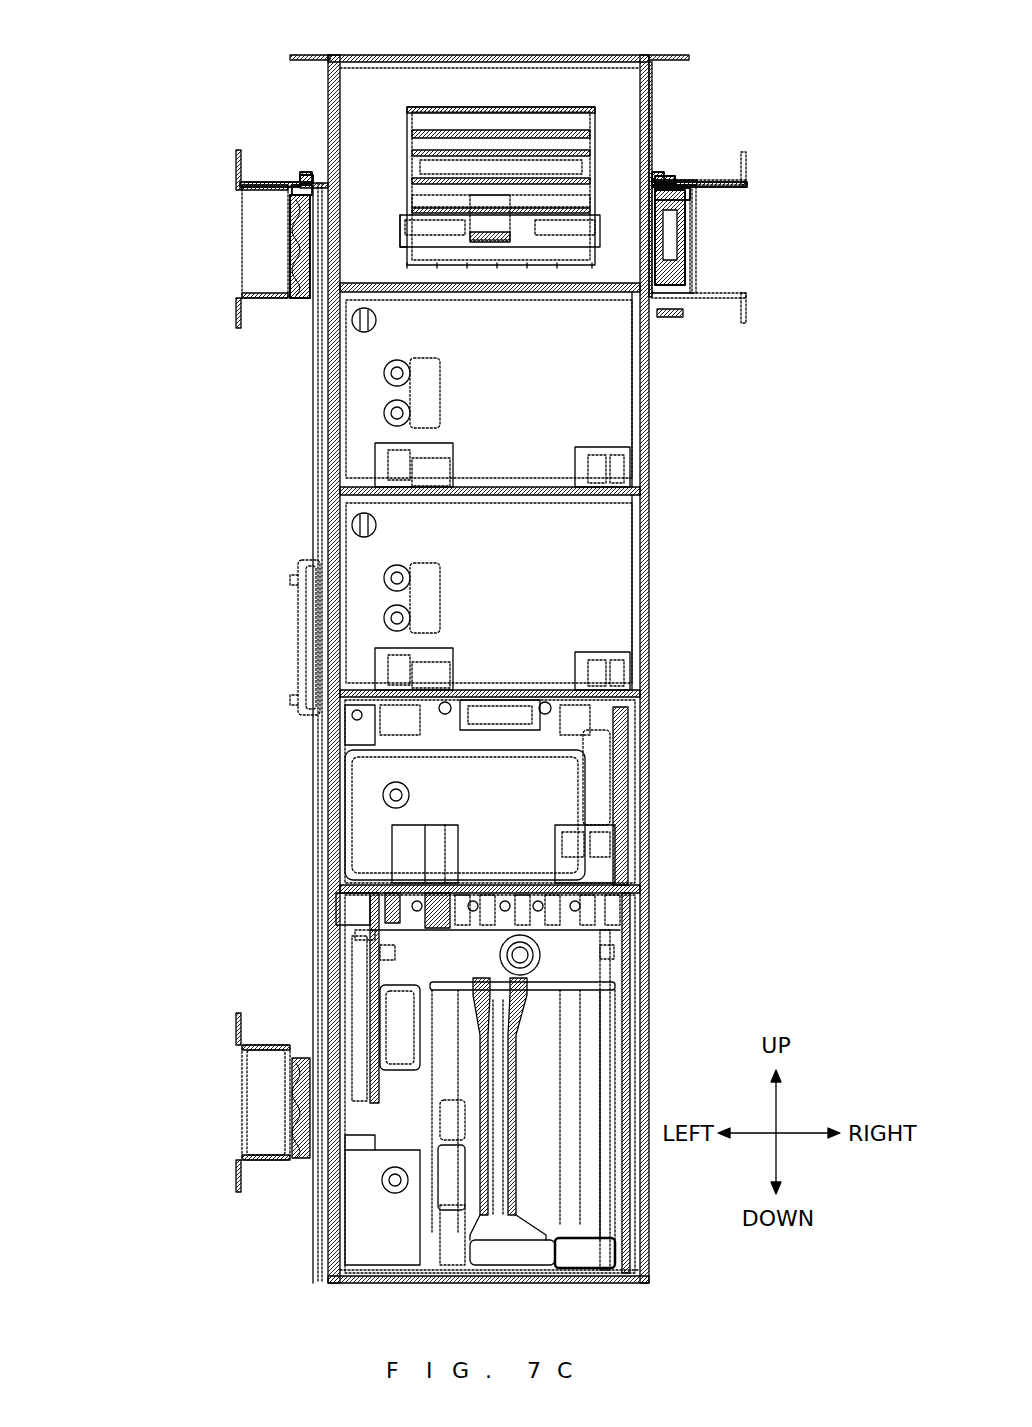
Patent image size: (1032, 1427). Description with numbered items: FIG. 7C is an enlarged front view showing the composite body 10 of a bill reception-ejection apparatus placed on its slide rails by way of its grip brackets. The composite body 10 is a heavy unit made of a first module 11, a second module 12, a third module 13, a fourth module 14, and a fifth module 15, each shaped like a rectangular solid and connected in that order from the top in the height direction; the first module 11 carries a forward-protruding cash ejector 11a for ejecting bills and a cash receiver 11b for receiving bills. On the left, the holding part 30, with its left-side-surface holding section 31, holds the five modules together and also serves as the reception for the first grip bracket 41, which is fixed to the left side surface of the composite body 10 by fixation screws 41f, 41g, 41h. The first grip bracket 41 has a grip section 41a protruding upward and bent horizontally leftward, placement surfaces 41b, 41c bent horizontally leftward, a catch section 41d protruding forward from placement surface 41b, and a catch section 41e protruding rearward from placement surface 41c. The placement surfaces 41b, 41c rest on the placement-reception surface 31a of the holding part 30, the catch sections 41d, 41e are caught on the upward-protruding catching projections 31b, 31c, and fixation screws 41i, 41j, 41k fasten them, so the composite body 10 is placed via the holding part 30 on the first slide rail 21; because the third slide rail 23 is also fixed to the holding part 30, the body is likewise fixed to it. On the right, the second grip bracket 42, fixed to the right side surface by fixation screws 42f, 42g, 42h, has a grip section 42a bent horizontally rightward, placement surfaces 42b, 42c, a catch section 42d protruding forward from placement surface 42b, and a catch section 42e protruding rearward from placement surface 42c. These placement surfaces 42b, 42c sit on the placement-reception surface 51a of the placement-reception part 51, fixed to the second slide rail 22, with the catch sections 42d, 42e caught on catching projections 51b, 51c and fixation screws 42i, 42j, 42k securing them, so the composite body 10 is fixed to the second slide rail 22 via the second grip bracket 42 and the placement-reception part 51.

The composite body 10 is at (575, 642).
The first module 11 is at (542, 252).
The cash ejector 11a is at (400, 247).
The cash receiver 11b is at (515, 135).
The second module 12 is at (648, 395).
The third module 13 is at (647, 578).
The fourth module 14 is at (648, 755).
The fifth module 15 is at (650, 975).
The first slide rail 21 is at (240, 282).
The second slide rail 22 is at (744, 323).
The third slide rail 23 is at (240, 1097).
The holding part 30 is at (427, 669).
The left-side-surface holding section 31 is at (312, 502).
The placement-reception surface 31a is at (320, 184).
The catching projection 31b is at (313, 178).
The catching projection 31c is at (306, 177).
The first grip bracket 41 is at (175, 193).
The grip section 41a is at (326, 72).
The placement surface 41b is at (313, 182).
The placement surface 41c is at (302, 190).
The catch section 41d is at (315, 183).
The catch section 41e is at (270, 184).
The fixation screw 41f is at (322, 238).
The fixation screw 41g is at (300, 246).
The fixation screw 41h is at (248, 276).
The fixation screw 41i is at (310, 178).
The fixation screw 41j is at (306, 179).
The fixation screw 41k is at (196, 136).
The second grip bracket 42 is at (789, 173).
The grip section 42a is at (650, 55).
The placement surface 42b is at (660, 196).
The placement surface 42c is at (672, 194).
The catch section 42d is at (665, 186).
The catch section 42e is at (699, 184).
The fixation screw 42f is at (652, 248).
The fixation screw 42g is at (670, 237).
The fixation screw 42h is at (772, 264).
The fixation screw 42i is at (665, 180).
The fixation screw 42j is at (665, 180).
The fixation screw 42k is at (792, 136).
The placement-reception part 51 is at (752, 235).
The placement-reception surface 51a is at (690, 183).
The catching projection 51b is at (660, 178).
The catching projection 51c is at (658, 177).